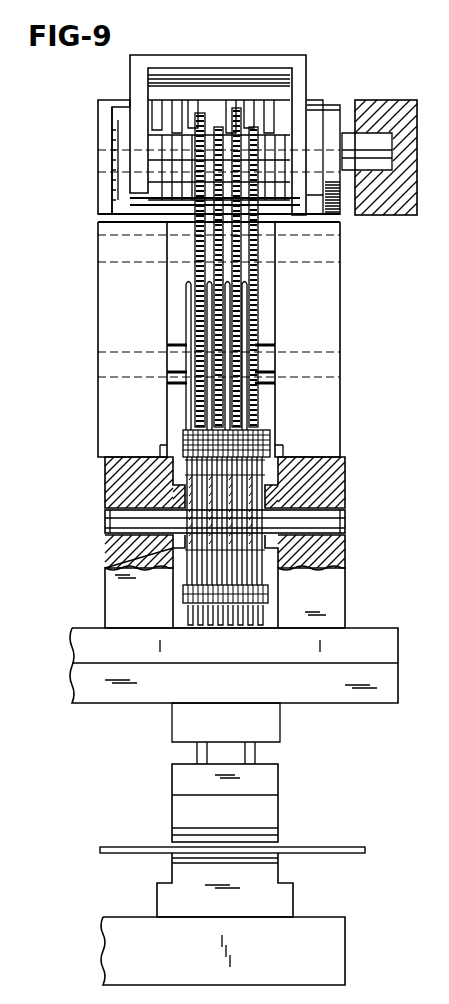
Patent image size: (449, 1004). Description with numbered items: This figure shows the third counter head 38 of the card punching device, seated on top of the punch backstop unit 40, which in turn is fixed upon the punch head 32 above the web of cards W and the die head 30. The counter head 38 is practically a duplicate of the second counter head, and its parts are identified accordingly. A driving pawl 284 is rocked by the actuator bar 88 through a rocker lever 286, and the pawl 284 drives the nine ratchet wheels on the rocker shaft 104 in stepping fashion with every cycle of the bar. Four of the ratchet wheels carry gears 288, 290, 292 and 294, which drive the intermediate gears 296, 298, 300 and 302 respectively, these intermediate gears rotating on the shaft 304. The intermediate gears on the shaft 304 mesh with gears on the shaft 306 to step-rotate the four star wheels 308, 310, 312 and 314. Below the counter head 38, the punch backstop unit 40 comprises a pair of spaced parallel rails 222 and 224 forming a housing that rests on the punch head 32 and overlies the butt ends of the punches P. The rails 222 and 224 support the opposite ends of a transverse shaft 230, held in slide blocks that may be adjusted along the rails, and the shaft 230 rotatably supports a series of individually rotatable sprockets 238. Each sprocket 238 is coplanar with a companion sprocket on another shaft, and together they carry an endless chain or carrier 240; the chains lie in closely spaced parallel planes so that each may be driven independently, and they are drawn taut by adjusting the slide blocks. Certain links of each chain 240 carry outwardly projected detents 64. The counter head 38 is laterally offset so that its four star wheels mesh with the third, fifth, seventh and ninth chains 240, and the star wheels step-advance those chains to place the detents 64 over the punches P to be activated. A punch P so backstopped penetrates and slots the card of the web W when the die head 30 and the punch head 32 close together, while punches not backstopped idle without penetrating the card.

The counter head 38 is at (98, 110).
The rocker shaft 104 is at (120, 182).
The driving pawl 284 is at (163, 88).
The gear 288 is at (211, 115).
The gear 290 is at (229, 115).
The gear 292 is at (233, 155).
The gear 294 is at (262, 155).
The actuator bar 88 is at (373, 100).
The rocker lever 286 is at (340, 180).
The shaft 304 is at (108, 223).
The shaft 306 is at (112, 356).
The intermediate gear 296 is at (195, 240).
The intermediate gear 298 is at (215, 250).
The intermediate gear 300 is at (232, 242).
The intermediate gear 302 is at (240, 258).
The star wheel 308 is at (190, 422).
The star wheel 310 is at (192, 428).
The star wheel 312 is at (228, 420).
The star wheel 314 is at (240, 428).
The punch backstop unit 40 is at (104, 492).
The shaft 230 is at (325, 522).
The rail 222 is at (106, 597).
The rail 224 is at (345, 606).
The sprocket 238 is at (270, 574).
The endless chain 240 is at (265, 596).
The detent 64 is at (265, 604).
The punch P is at (205, 626).
The punch head 32 is at (280, 808).
The web of cards W is at (355, 857).
The die head 30 is at (280, 875).